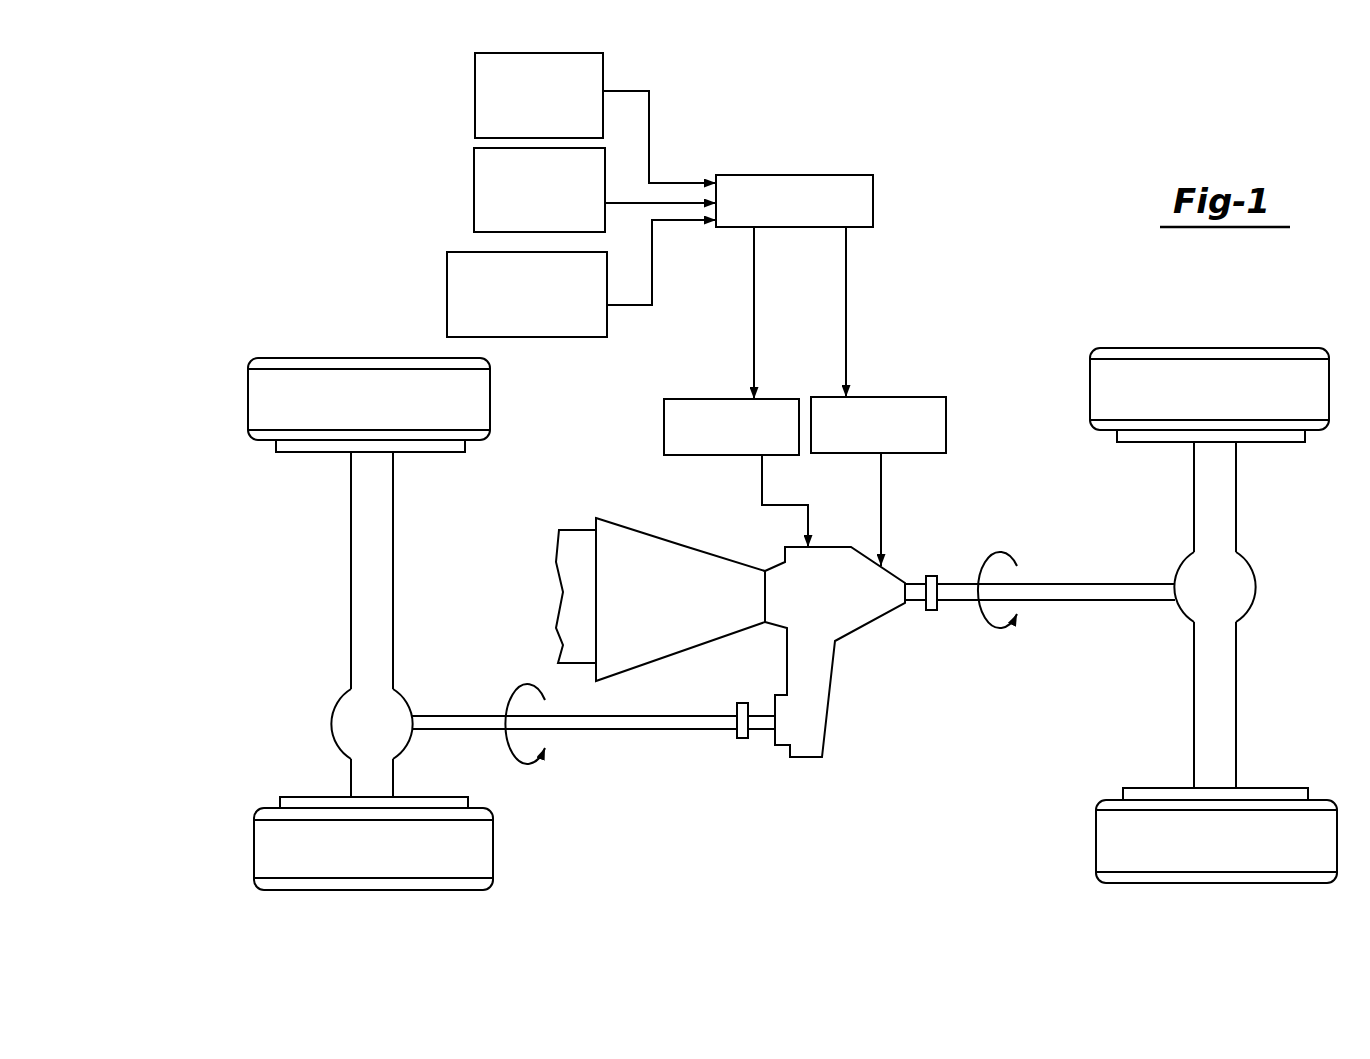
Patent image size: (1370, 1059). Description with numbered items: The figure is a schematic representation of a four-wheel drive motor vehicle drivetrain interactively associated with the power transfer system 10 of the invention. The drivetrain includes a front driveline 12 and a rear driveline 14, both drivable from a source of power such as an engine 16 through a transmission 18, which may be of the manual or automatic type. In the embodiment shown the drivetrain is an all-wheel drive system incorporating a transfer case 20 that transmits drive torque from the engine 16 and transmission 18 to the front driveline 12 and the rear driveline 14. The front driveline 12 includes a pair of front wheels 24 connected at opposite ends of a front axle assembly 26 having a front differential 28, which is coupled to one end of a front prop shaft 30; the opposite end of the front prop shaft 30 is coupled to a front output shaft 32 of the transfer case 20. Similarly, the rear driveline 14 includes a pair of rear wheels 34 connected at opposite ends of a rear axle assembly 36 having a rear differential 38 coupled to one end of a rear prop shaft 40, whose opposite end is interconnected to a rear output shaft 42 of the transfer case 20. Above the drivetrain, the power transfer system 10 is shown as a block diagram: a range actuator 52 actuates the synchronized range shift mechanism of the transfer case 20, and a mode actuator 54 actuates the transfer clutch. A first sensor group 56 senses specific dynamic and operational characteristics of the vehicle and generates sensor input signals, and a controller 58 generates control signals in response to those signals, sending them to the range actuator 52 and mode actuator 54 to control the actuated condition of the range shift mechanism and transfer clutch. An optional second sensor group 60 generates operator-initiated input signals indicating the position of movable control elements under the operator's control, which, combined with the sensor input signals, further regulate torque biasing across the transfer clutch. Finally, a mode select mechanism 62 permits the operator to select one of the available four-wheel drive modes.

The power transfer system 10 is at (960, 240).
The front driveline 12 is at (420, 610).
The rear driveline 14 is at (1113, 548).
The engine 16 is at (572, 571).
The transmission 18 is at (690, 613).
The transfer case 20 is at (868, 628).
The front wheels 24 is at (307, 397).
The front axle assembly 26 is at (370, 518).
The front differential 28 is at (353, 705).
The front prop shaft 30 is at (695, 725).
The front output shaft 32 is at (760, 725).
The rear wheels 34 is at (1162, 405).
The rear axle assembly 36 is at (1208, 490).
The rear differential 38 is at (1230, 582).
The rear prop shaft 40 is at (1112, 600).
The rear output shaft 42 is at (926, 590).
The range actuator 52 is at (705, 455).
The mode actuator 54 is at (946, 397).
The first sensor group 56 is at (475, 92).
The controller 58 is at (810, 175).
The second sensor group 60 is at (474, 202).
The mode select mechanism 62 is at (572, 337).